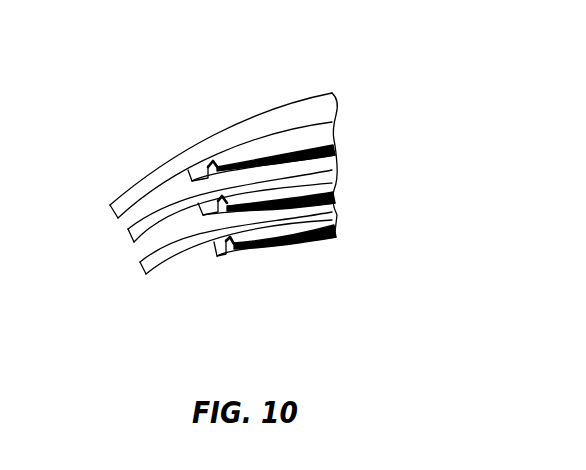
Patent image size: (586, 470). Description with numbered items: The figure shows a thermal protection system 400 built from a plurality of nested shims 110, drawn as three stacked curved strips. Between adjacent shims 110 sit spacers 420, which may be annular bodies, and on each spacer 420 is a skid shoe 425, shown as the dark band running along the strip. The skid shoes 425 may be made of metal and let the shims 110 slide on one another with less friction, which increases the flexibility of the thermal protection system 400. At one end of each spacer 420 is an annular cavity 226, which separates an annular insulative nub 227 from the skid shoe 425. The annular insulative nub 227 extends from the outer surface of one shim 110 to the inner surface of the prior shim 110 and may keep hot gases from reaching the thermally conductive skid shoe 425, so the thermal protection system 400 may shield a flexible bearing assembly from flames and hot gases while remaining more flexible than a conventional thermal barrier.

The thermal protection system 400 is at (176, 92).
The shim 110 is at (305, 108).
The spacer 420 is at (315, 140).
The skid shoe 425 is at (333, 150).
The annular cavity 226 is at (228, 258).
The annular insulative nub 227 is at (216, 257).